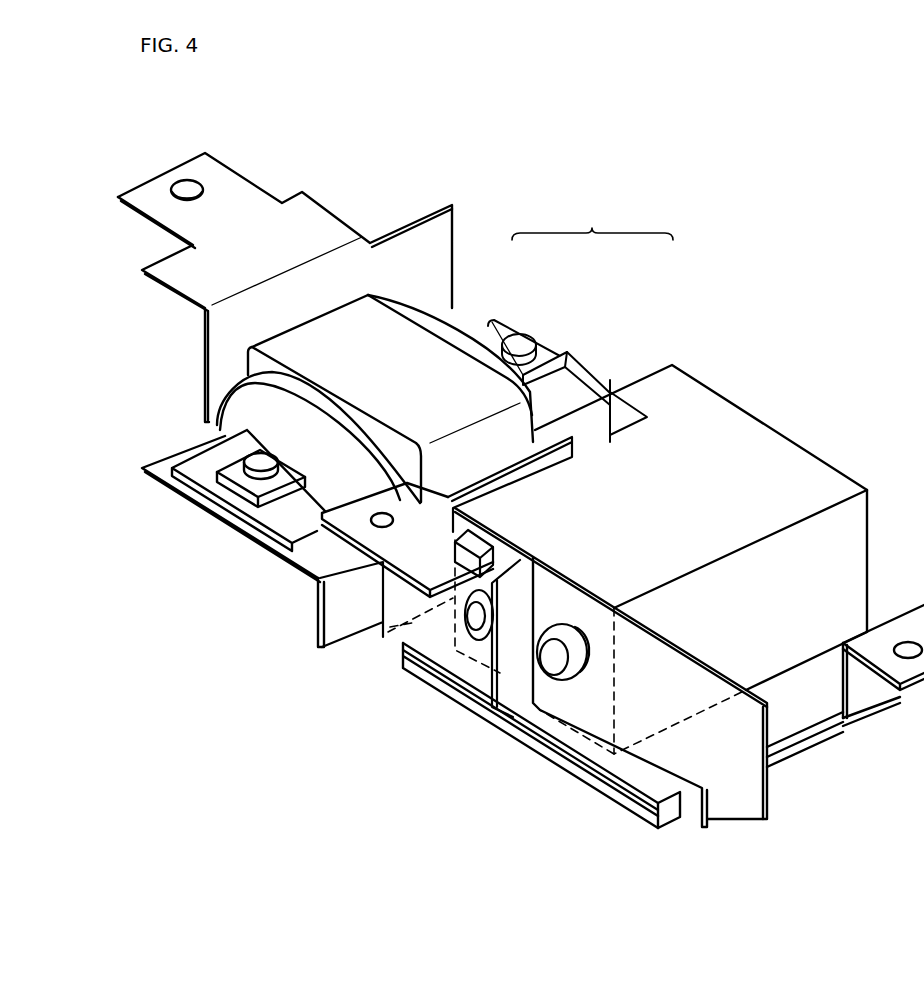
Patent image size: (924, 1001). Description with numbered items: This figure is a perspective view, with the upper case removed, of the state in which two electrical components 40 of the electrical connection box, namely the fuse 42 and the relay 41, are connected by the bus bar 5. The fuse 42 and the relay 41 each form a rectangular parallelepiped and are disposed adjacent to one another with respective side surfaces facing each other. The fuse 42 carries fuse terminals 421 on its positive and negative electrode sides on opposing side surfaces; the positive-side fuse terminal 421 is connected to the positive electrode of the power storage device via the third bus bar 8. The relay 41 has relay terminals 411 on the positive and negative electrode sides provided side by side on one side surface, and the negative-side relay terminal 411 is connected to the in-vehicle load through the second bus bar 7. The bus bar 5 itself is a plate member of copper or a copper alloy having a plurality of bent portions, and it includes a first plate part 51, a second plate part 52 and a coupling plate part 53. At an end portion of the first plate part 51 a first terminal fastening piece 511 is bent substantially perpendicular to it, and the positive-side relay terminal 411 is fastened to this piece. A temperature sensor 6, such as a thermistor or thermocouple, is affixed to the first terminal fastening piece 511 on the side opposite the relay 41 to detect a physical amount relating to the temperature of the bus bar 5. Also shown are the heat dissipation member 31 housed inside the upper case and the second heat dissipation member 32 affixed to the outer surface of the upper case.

The third bus bar 8 is at (237, 187).
The electrical components 40 is at (592, 221).
The relay 41 is at (645, 385).
The fuse 42 is at (427, 352).
The fuse terminal 421 is at (200, 465).
The temperature sensor 6 is at (490, 520).
The bus bar 5 is at (346, 775).
The first plate part 51 is at (450, 598).
The first terminal fastening piece 511 is at (440, 653).
The second plate part 52 is at (313, 563).
The coupling plate part 53 is at (333, 612).
The relay terminal 411 is at (472, 640).
The heat dissipation member 31 is at (548, 668).
The second heat dissipation member 32 is at (608, 790).
The second bus bar 7 is at (648, 760).